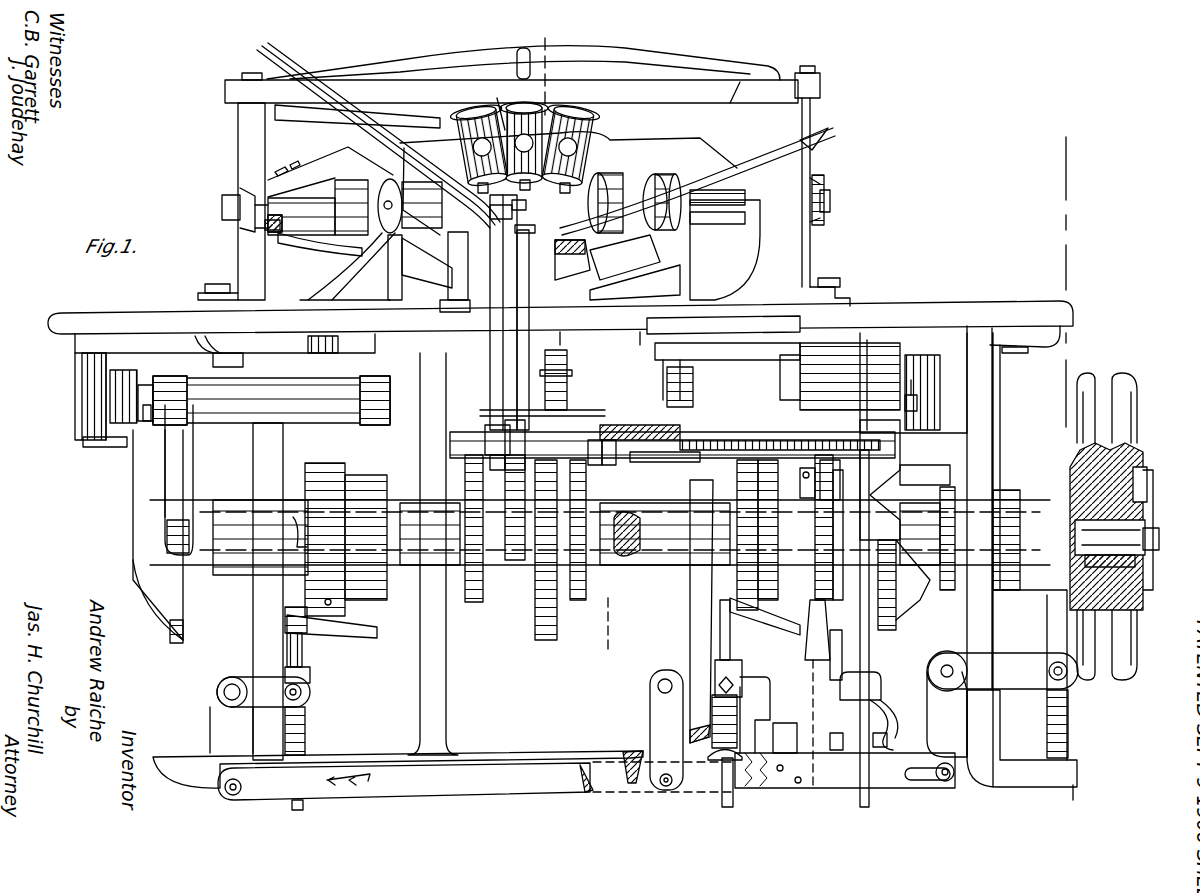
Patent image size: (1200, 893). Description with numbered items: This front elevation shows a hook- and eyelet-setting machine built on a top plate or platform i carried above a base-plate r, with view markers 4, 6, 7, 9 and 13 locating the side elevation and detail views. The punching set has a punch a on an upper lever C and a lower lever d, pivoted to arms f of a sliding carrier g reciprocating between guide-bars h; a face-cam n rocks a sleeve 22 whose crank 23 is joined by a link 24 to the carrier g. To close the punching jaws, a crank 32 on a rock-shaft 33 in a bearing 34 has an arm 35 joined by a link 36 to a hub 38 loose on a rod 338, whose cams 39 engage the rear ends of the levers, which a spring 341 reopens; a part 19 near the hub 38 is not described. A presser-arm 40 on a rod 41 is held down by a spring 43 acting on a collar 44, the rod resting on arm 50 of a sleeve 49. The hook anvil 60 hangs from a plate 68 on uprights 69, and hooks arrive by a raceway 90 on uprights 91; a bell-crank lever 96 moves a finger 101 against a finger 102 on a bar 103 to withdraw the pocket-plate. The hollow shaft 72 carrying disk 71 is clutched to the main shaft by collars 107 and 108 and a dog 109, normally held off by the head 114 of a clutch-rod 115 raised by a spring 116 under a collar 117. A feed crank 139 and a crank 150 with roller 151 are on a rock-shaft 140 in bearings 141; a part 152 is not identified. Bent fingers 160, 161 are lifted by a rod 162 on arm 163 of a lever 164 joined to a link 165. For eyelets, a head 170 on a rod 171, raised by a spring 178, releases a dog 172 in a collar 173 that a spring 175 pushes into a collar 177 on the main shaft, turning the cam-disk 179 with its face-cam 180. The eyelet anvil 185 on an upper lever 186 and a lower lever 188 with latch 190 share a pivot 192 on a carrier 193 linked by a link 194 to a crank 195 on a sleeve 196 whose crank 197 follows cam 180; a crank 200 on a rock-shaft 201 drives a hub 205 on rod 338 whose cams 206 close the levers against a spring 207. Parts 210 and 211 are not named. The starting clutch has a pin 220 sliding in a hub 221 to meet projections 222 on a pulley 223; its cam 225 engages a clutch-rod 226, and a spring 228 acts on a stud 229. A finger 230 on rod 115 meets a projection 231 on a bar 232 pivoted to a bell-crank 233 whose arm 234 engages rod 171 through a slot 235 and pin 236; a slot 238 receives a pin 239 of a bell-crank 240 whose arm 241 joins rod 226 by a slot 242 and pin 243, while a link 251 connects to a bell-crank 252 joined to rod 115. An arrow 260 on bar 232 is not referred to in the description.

The section line 4- 4 is at (1082, 461).
The section line 6- 6 is at (581, 345).
The gear 7 is at (553, 462).
The gear 9 is at (896, 569).
The gear wheel 13 is at (785, 795).
The bar 19 is at (717, 226).
The rocking sleeve 22 is at (929, 395).
The crank 23 is at (913, 383).
The link 24 is at (723, 322).
The crank 32 is at (925, 477).
The rock-shaft 33 is at (927, 386).
The bearing 34 is at (840, 376).
The crank 35 is at (667, 392).
The link 36 is at (660, 362).
The hub 38 is at (716, 203).
The cams 39 is at (690, 180).
The presser-arm 40 is at (500, 241).
The presser-rod 41 is at (572, 378).
The spring 43 is at (567, 363).
The collar 44 is at (582, 410).
The hub 49 is at (617, 462).
The arm 50 is at (600, 462).
The anvil 60 is at (500, 103).
The plate 68 is at (734, 103).
The uprights 69 is at (238, 270).
The disk 71 is at (556, 628).
The hollow shaft 72 is at (632, 562).
The raceway 90 is at (808, 142).
The uprights 91 is at (780, 250).
The bell-crank lever 96 is at (527, 470).
The finger 101 is at (625, 259).
The finger 102 is at (513, 330).
The bar 103 is at (509, 272).
The collar 107 is at (757, 535).
The collar 108 is at (786, 530).
The clutch dog 109 is at (771, 616).
The head 114 is at (704, 611).
The clutch-rod 115 is at (730, 648).
The spring 116 is at (714, 718).
The collar 117 is at (742, 682).
The crank 139 is at (497, 468).
The rock-shaft 140 is at (665, 464).
The bearings 141 is at (452, 438).
The crank 150 is at (838, 600).
The roller 151 is at (813, 632).
The lever 152 is at (846, 655).
The bent finger 160 is at (805, 478).
The bent finger 161 is at (830, 480).
The rod 162 is at (883, 480).
The upright arm 163 is at (870, 630).
The lever 164 is at (842, 690).
The link 165 is at (850, 628).
The head 170 is at (288, 622).
The clutch-rod 171 is at (302, 652).
The clutch-dog 172 is at (333, 649).
The collar 173 is at (327, 463).
The spring 175 is at (300, 580).
The collar 177 is at (364, 476).
The spring 178 is at (310, 716).
The cam-disk 179 is at (184, 600).
The face-cam 180 is at (160, 622).
The anvil 185 is at (478, 186).
The upper setting lever 186 is at (455, 120).
The lower setting lever 188 is at (420, 267).
The latch 190 is at (483, 300).
The pivot 192 is at (385, 238).
The carrier 193 is at (330, 290).
The link 194 is at (323, 331).
The crank 195 is at (162, 362).
The hollow rock-shaft 196 is at (88, 392).
The crank 197 is at (130, 445).
The crank 200 is at (195, 478).
The rock-shaft 201 is at (263, 398).
The hub 205 is at (348, 207).
The cams 206 is at (340, 185).
The spring 207 is at (268, 228).
The bar 210 is at (333, 120).
The clamp 211 is at (450, 295).
The clutch-pin 220 is at (1030, 675).
The hub 221 is at (1073, 467).
The projections 222 is at (1150, 555).
The pulley 223 is at (1132, 680).
The cam 225 is at (1012, 549).
The starting-clutch rod 226 is at (1068, 720).
The spring 228 is at (1107, 596).
The stud 229 is at (1145, 610).
The finger 230 is at (774, 727).
The projection 231 is at (813, 745).
The link 232 is at (586, 786).
The bell-crank lever 233 is at (215, 766).
The arm 234 is at (245, 670).
The slot 235 is at (302, 691).
The pin 236 is at (255, 692).
The slot 238 is at (920, 781).
The pin 239 is at (950, 780).
The bell-crank lever 240 is at (927, 712).
The arm 241 is at (1015, 690).
The slot 242 is at (1066, 680).
The pin 243 is at (1050, 672).
The link 251 is at (640, 790).
The bell-crank lever 252 is at (655, 735).
The arrow 260 is at (353, 787).
The rod 338 is at (222, 206).
The spring 341 is at (825, 226).
The punch a is at (568, 152).
The upper punching lever C is at (622, 142).
The lower punching lever d is at (635, 277).
The upright arms f is at (714, 250).
The sliding carrier g is at (410, 500).
The guide-bars h is at (608, 327).
The platform i is at (560, 316).
The face-cam n is at (903, 645).
The base-plate r is at (364, 758).